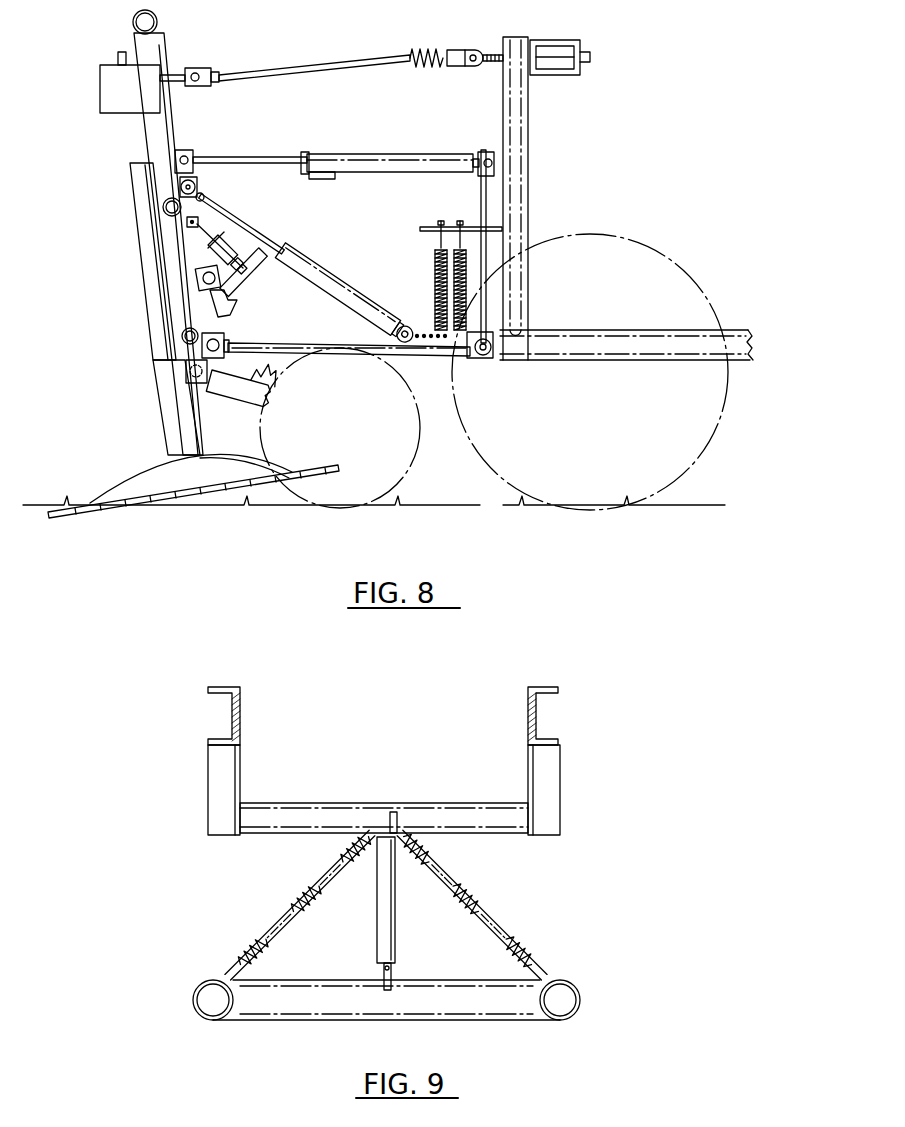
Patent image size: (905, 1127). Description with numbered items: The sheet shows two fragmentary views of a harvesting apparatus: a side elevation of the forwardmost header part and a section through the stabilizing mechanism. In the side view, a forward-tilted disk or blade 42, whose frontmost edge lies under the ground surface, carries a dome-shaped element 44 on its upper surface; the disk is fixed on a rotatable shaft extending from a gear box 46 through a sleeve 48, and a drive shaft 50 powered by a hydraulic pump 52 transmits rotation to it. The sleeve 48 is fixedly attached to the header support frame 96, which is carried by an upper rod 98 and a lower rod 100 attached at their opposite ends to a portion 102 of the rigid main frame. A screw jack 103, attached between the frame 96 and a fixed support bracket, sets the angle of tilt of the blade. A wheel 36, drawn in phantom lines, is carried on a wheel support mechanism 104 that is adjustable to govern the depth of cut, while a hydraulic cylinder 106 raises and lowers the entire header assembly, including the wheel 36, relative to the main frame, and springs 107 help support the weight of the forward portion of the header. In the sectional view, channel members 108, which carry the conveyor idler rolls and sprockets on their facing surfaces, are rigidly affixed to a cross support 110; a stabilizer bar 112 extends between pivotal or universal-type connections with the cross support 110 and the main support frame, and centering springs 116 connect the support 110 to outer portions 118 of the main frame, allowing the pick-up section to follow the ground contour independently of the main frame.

In FIG. 8, the wheel 36 is at (424, 440).
In FIG. 8, the disk 42 is at (97, 510).
In FIG. 8, the dome-shaped element 44 is at (147, 480).
In FIG. 8, the gear box 46 is at (122, 95).
In FIG. 8, the sleeve 48 is at (157, 250).
In FIG. 8, the drive shaft 50 is at (277, 60).
In FIG. 8, the hydraulic pump 52 is at (557, 60).
In FIG. 8, the header support frame 96 is at (183, 126).
In FIG. 8, the upper rod 98 is at (365, 162).
In FIG. 8, the lower rod 100 is at (317, 347).
In FIG. 8, the portion of rigid main frame 102 is at (486, 190).
In FIG. 8, the screw jack 103 is at (232, 248).
In FIG. 8, the wheel support mechanism 104 is at (245, 408).
In FIG. 8, the hydraulic cylinder 106 is at (322, 272).
In FIG. 8, the springs 107 is at (440, 275).
In FIG. 9, the channel member 108 is at (242, 722).
In FIG. 9, the cross support 110 is at (313, 817).
In FIG. 9, the stabilizer bar 112 is at (387, 897).
In FIG. 9, the centering spring 116 is at (297, 898).
In FIG. 9, the outer portion of main frame 118 is at (200, 987).